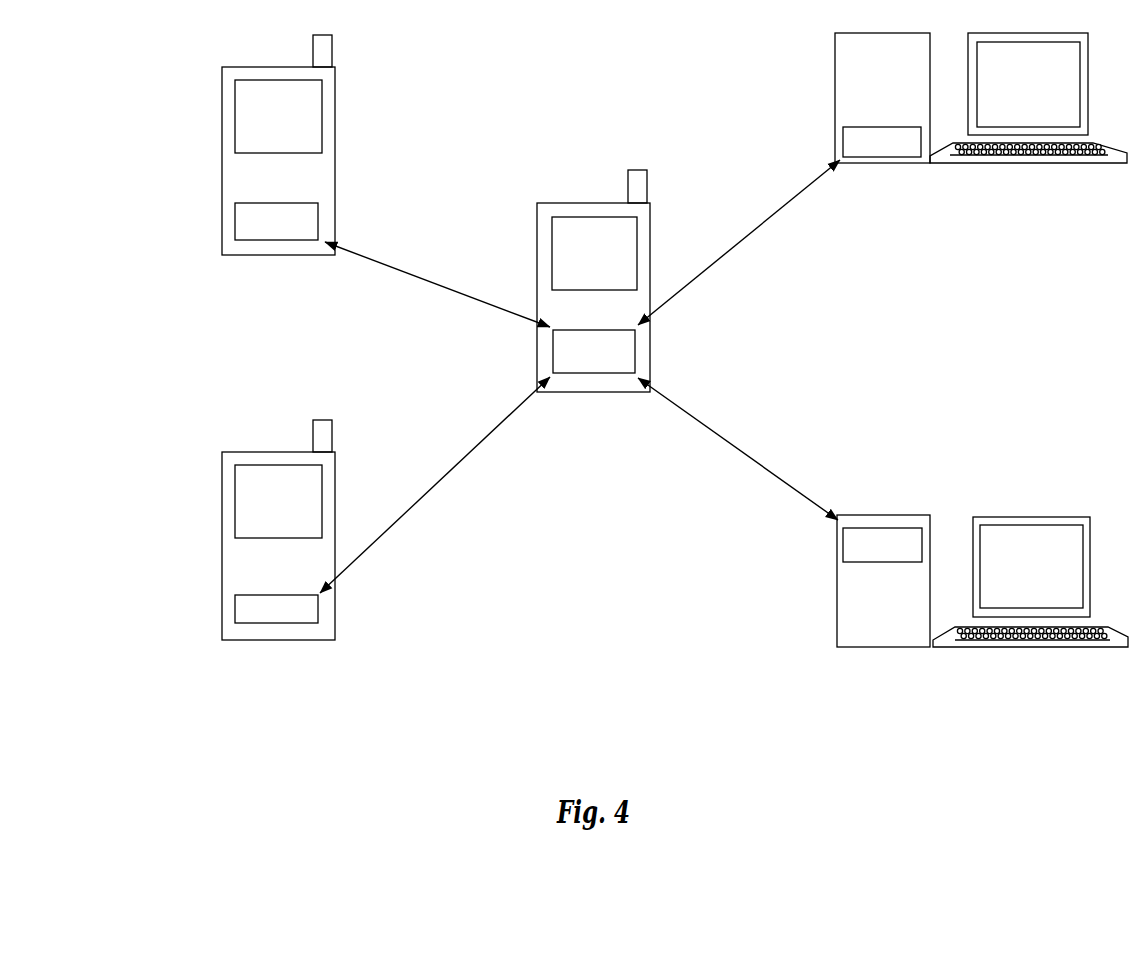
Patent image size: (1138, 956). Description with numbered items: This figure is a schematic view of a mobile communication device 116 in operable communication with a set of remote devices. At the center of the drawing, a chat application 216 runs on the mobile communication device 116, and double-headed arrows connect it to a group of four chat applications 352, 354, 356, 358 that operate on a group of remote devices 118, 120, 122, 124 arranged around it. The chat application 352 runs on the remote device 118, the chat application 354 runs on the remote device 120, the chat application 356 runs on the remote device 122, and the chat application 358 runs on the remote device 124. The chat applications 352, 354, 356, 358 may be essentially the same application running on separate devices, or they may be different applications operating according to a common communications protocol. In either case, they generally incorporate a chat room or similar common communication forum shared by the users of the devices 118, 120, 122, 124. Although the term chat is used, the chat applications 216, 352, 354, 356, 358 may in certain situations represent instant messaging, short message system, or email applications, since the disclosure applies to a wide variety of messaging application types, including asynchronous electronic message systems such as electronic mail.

The remote device 124 is at (222, 67).
The chat application 358 is at (247, 203).
The mobile communication device 116 is at (580, 203).
The chat application 216 is at (553, 355).
The remote device 118 is at (222, 452).
The chat application 352 is at (235, 612).
The remote device 122 is at (835, 33).
The chat application 356 is at (843, 143).
The remote device 120 is at (1015, 517).
The chat application 354 is at (843, 542).